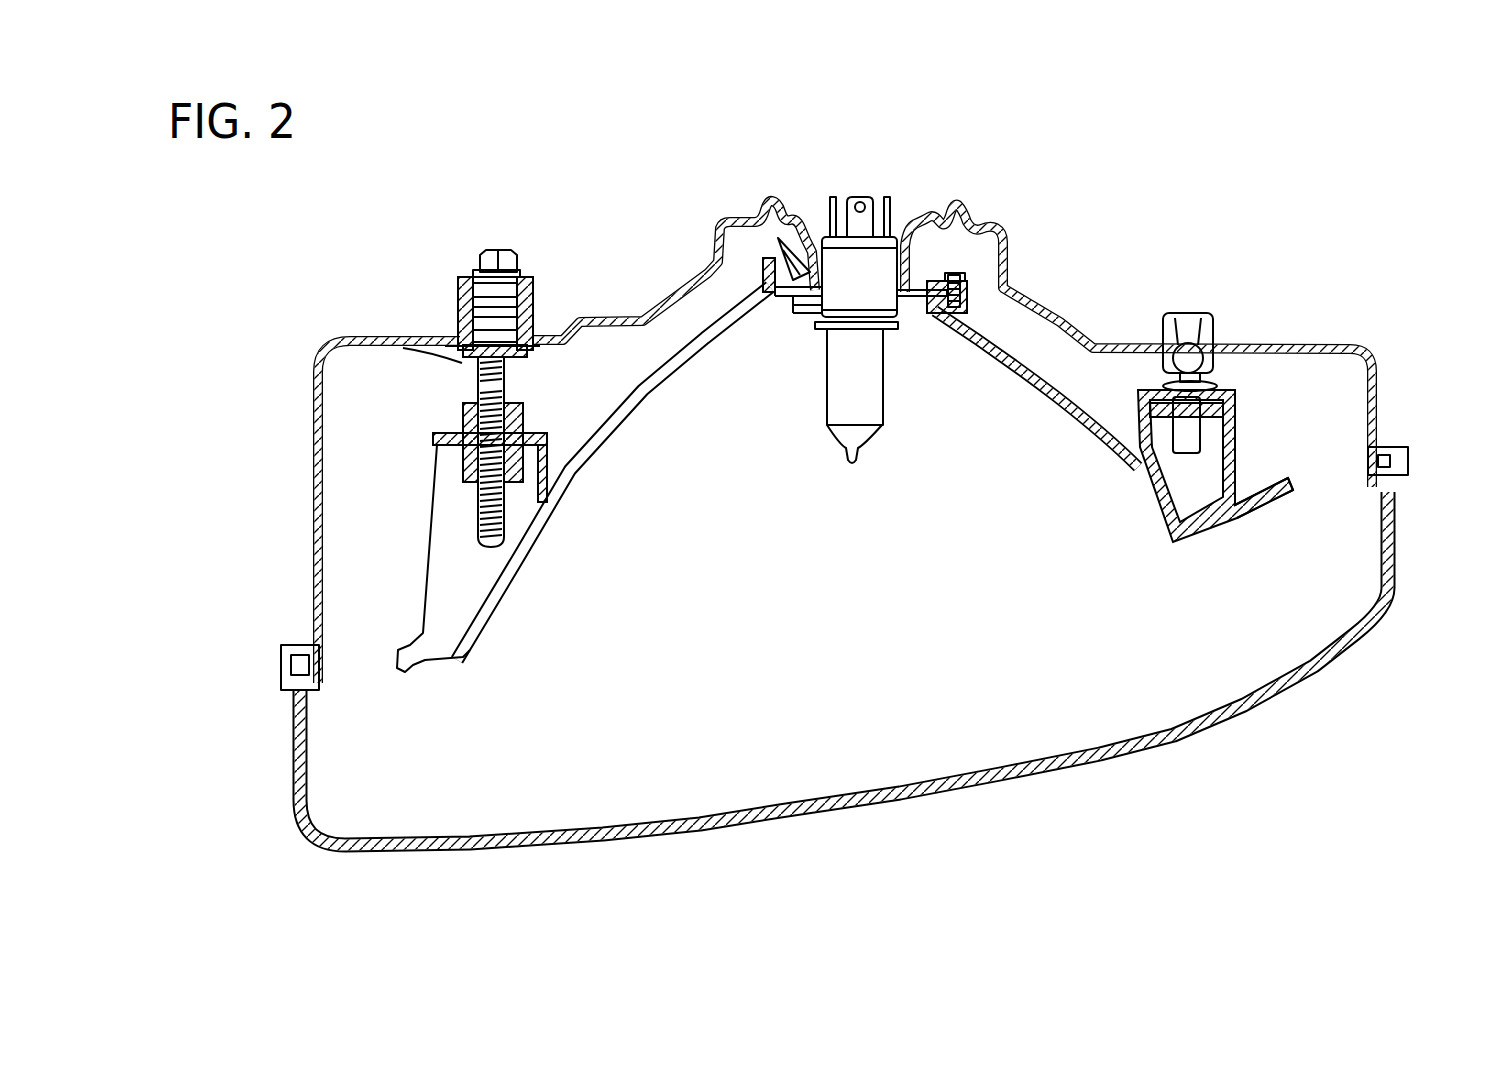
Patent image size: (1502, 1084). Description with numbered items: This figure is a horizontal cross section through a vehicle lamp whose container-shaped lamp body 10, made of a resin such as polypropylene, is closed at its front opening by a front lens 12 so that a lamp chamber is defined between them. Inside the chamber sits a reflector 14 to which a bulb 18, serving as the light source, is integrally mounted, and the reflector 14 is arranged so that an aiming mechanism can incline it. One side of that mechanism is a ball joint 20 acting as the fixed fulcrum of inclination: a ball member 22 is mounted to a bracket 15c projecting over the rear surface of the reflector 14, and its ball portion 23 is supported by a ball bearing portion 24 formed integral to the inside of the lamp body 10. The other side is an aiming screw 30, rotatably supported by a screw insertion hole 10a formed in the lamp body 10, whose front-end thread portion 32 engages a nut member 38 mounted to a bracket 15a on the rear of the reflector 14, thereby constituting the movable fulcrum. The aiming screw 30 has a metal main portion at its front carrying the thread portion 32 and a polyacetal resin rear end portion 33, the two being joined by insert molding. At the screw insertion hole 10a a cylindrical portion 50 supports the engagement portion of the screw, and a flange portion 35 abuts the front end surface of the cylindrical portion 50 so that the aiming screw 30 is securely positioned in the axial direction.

The lamp body 10 is at (1060, 320).
The screw insertion hole 10a is at (467, 335).
The front lens 12 is at (940, 810).
The reflector 14 is at (680, 347).
The bracket 15a is at (437, 440).
The bracket 15c is at (1240, 417).
The bulb 18 is at (883, 401).
The ball joint 20 is at (1306, 302).
The ball member 22 is at (1173, 447).
The ball portion 23 is at (1210, 343).
The ball bearing portion 24 is at (1190, 333).
The aiming screw 30 is at (475, 386).
The thread portion 32 is at (432, 537).
The rear end portion 33 is at (493, 250).
The flange portion 35 is at (395, 336).
The nut member 38 is at (470, 476).
The cylindrical portion 50 is at (530, 280).